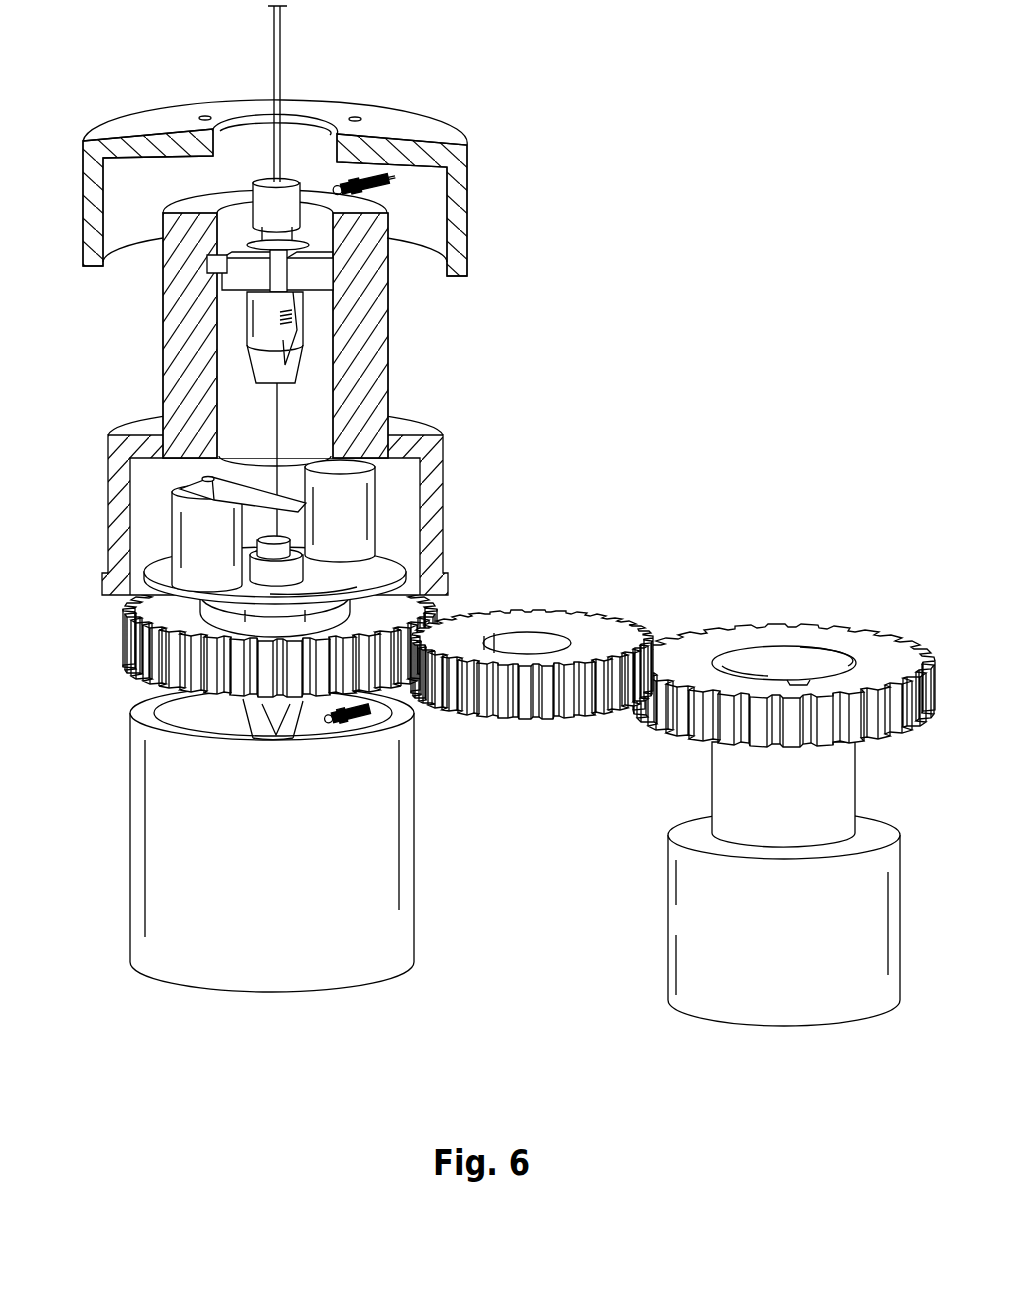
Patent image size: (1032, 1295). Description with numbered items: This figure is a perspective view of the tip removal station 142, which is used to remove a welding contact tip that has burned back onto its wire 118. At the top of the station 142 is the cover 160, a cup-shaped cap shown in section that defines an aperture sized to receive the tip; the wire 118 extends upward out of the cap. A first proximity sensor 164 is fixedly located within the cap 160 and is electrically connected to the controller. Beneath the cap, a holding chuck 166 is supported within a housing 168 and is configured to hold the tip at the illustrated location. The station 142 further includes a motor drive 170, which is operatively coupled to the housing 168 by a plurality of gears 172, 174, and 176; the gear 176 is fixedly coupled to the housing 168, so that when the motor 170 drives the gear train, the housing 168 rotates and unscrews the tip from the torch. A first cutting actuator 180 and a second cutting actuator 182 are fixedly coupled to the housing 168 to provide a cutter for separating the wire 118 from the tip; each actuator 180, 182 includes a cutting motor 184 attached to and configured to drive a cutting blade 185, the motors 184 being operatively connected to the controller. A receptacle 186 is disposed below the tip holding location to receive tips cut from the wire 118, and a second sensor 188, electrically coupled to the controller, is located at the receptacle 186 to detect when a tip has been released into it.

The wire 118 is at (273, 38).
The tip removal station 142 is at (475, 516).
The cover 160 is at (470, 212).
The first proximity sensor 164 is at (348, 180).
The holding chuck 166 is at (213, 288).
The housing 168 is at (388, 332).
The motor drive 170 is at (682, 915).
The gear 172 is at (843, 643).
The gear 174 is at (608, 633).
The gear 176 is at (147, 660).
The first cutting actuator 180 is at (167, 512).
The second cutting actuator 182 is at (386, 505).
The cutting motor 184 is at (274, 520).
The cutting blade 185 is at (222, 486).
The receptacle 186 is at (143, 813).
The second sensor 188 is at (363, 716).